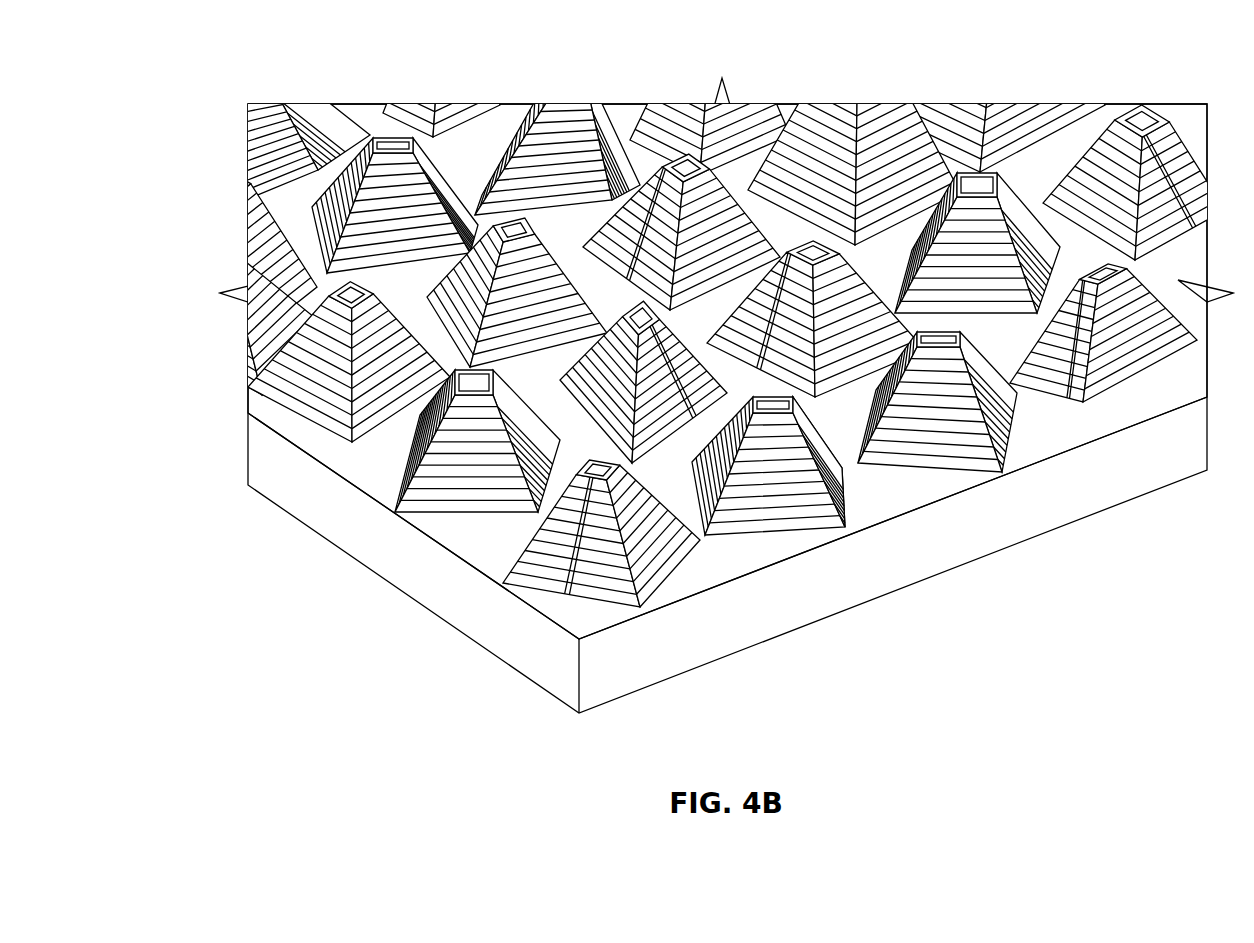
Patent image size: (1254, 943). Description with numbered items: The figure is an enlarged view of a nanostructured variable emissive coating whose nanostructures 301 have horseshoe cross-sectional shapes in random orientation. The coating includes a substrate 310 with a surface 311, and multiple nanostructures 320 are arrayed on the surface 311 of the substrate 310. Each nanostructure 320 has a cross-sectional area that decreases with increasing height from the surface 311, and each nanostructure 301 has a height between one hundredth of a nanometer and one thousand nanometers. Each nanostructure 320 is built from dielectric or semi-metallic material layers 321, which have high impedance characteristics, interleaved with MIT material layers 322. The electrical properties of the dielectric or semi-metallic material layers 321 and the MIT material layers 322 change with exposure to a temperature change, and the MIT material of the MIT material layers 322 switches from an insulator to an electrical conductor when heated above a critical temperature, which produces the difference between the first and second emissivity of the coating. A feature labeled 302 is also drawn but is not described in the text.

The nanostructure 301 is at (614, 592).
The groove 302 is at (577, 562).
The substrate 310 is at (405, 572).
The surface 311 is at (365, 470).
The nanostructure 320 is at (762, 74).
The dielectric or semi-metallic material layer 321 is at (755, 482).
The MIT material layer 322 is at (785, 493).